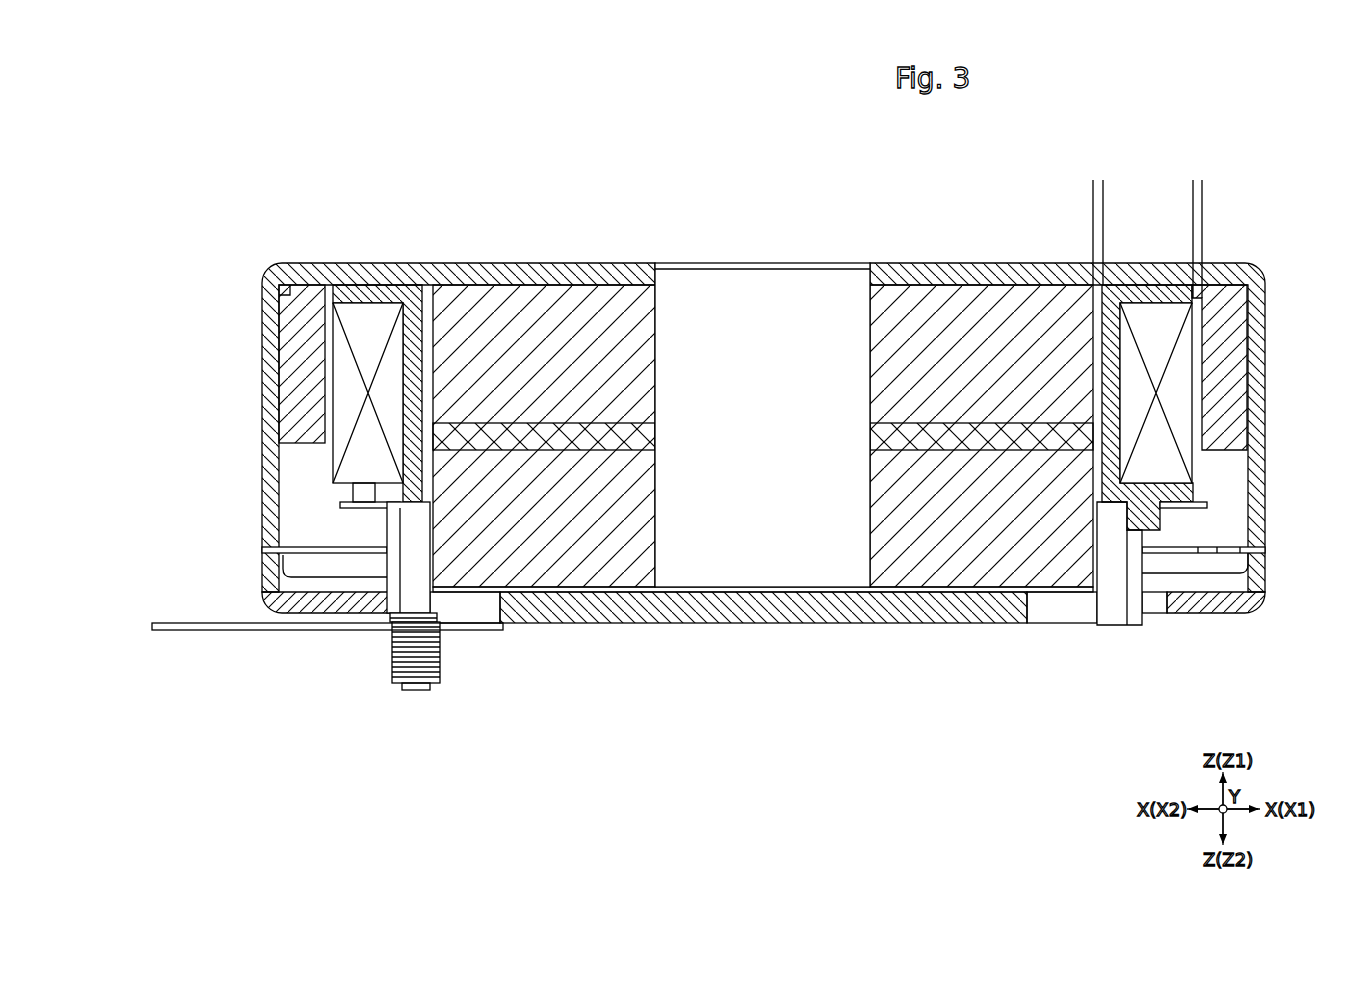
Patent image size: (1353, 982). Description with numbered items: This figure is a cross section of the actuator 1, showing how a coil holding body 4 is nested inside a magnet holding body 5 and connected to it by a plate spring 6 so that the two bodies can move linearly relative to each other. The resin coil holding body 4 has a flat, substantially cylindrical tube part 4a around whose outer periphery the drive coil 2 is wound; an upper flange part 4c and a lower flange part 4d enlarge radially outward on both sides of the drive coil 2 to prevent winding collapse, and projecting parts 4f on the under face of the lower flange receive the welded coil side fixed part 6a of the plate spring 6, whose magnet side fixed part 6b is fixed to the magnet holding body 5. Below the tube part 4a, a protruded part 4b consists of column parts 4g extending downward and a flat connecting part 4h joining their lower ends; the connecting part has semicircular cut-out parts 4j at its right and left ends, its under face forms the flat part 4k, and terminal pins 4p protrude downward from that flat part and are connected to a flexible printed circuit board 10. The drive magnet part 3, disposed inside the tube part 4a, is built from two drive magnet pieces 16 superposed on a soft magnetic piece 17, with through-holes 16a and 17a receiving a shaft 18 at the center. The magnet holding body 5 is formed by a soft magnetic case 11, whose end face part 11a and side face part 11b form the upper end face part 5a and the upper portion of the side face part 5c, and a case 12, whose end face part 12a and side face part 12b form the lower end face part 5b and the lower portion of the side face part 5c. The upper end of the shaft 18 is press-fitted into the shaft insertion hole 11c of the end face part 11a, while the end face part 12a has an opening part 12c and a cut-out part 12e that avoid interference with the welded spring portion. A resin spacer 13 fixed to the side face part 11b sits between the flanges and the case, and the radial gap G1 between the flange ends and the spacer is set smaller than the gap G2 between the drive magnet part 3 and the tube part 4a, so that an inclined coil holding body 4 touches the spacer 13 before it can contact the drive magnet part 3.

The actuator 1 is at (1302, 132).
The drive coil 2 is at (290, 392).
The drive magnet part 3 is at (513, 283).
The coil holding body 4 is at (365, 285).
The tube part 4a is at (1122, 368).
The protruded part 4b is at (885, 623).
The flange part 4c is at (1240, 290).
The flange part 4d is at (1197, 493).
The projecting part 4f is at (1160, 520).
The column part 4g is at (1170, 565).
The connecting part 4h is at (885, 623).
The cut-out part 4j is at (497, 607).
The flat part 4k is at (745, 623).
The terminal pin 4p is at (412, 690).
The magnet holding body 5 is at (210, 493).
The end face part 5a is at (965, 283).
The end face part 5b is at (320, 613).
The side face part 5c is at (262, 455).
The plate spring 6 is at (1220, 548).
The coil side fixed part 6a is at (1207, 505).
The magnet side fixed part 6b is at (1220, 548).
The flexible printed circuit board 10 is at (200, 632).
The case 11 is at (262, 512).
The end face part 11a is at (965, 283).
The side face part 11b is at (262, 455).
The shaft insertion hole 11c is at (658, 285).
The case 12 is at (262, 565).
The end face part 12a is at (320, 613).
The side face part 12b is at (262, 580).
The opening part 12c is at (358, 598).
The cut-out part 12e is at (1198, 605).
The spacer 13 is at (275, 338).
The drive magnet piece 16 is at (583, 612).
The through-hole 16a is at (655, 352).
The magnetic piece 17 is at (610, 423).
The through-hole 17a is at (655, 440).
The shaft 18 is at (762, 268).
The gap space G1 is at (1222, 190).
The gap space G2 is at (1122, 190).